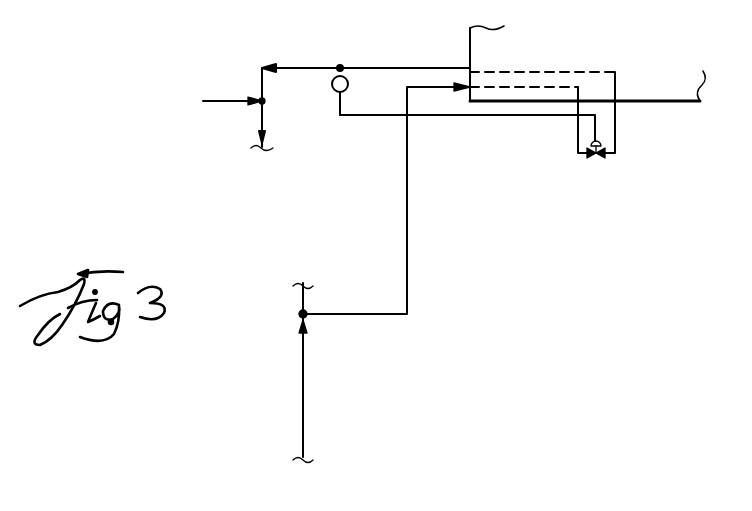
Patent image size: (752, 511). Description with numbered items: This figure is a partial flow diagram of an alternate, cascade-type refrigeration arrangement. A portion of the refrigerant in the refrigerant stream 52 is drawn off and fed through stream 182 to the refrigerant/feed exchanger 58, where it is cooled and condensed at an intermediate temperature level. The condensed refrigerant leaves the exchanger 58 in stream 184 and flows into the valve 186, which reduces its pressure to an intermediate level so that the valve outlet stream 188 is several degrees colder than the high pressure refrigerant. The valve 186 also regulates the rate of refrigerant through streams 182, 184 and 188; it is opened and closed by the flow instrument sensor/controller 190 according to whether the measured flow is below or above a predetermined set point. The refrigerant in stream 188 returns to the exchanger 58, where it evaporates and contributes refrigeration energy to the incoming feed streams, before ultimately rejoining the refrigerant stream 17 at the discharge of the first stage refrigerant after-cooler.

The refrigerant stream 17 is at (230, 100).
The refrigerant stream 52 is at (305, 413).
The refrigerant/feed exchanger 58 is at (665, 104).
The stream 182 is at (410, 273).
The stream 184 is at (577, 138).
The valve 186 is at (598, 158).
The valve outlet stream 188 is at (619, 137).
The flow instrument sensor/controller 190 is at (333, 90).